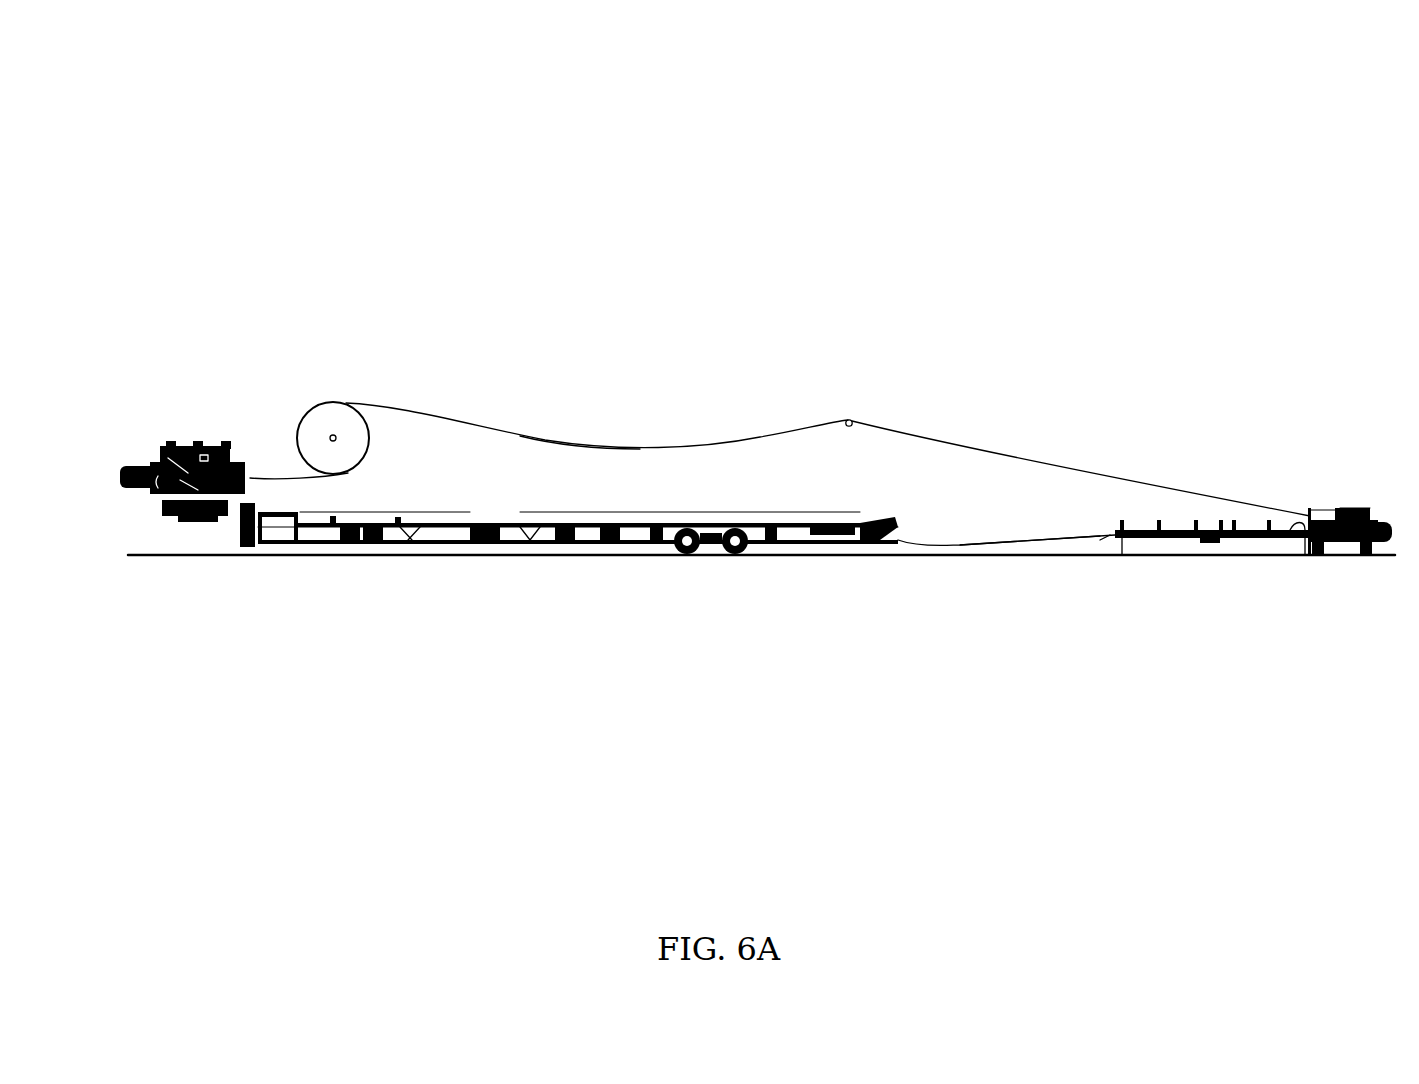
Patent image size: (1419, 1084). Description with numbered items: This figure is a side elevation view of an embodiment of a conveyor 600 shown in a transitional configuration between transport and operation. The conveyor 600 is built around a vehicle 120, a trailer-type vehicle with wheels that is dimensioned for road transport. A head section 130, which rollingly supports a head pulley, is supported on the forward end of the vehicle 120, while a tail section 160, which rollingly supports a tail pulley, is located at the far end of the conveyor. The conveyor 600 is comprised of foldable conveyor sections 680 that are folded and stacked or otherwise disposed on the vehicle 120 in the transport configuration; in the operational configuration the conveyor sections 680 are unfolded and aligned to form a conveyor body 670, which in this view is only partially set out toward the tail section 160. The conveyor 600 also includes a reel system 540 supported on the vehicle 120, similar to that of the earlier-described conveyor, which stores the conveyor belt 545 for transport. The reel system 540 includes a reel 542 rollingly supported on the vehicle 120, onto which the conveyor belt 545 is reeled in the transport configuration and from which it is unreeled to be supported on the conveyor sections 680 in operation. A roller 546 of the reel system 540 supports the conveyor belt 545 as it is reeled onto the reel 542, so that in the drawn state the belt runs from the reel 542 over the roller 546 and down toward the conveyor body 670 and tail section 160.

The conveyor 600 is at (1348, 170).
The head section 130 is at (108, 426).
The reel 542 is at (308, 412).
The reel system 540 is at (904, 360).
The conveyor belt 545 is at (545, 440).
The roller 546 is at (846, 427).
The vehicle 120 is at (528, 545).
The conveyor body 670 is at (1108, 630).
The foldable conveyor sections 680 is at (1170, 540).
The tail section 160 is at (1386, 484).